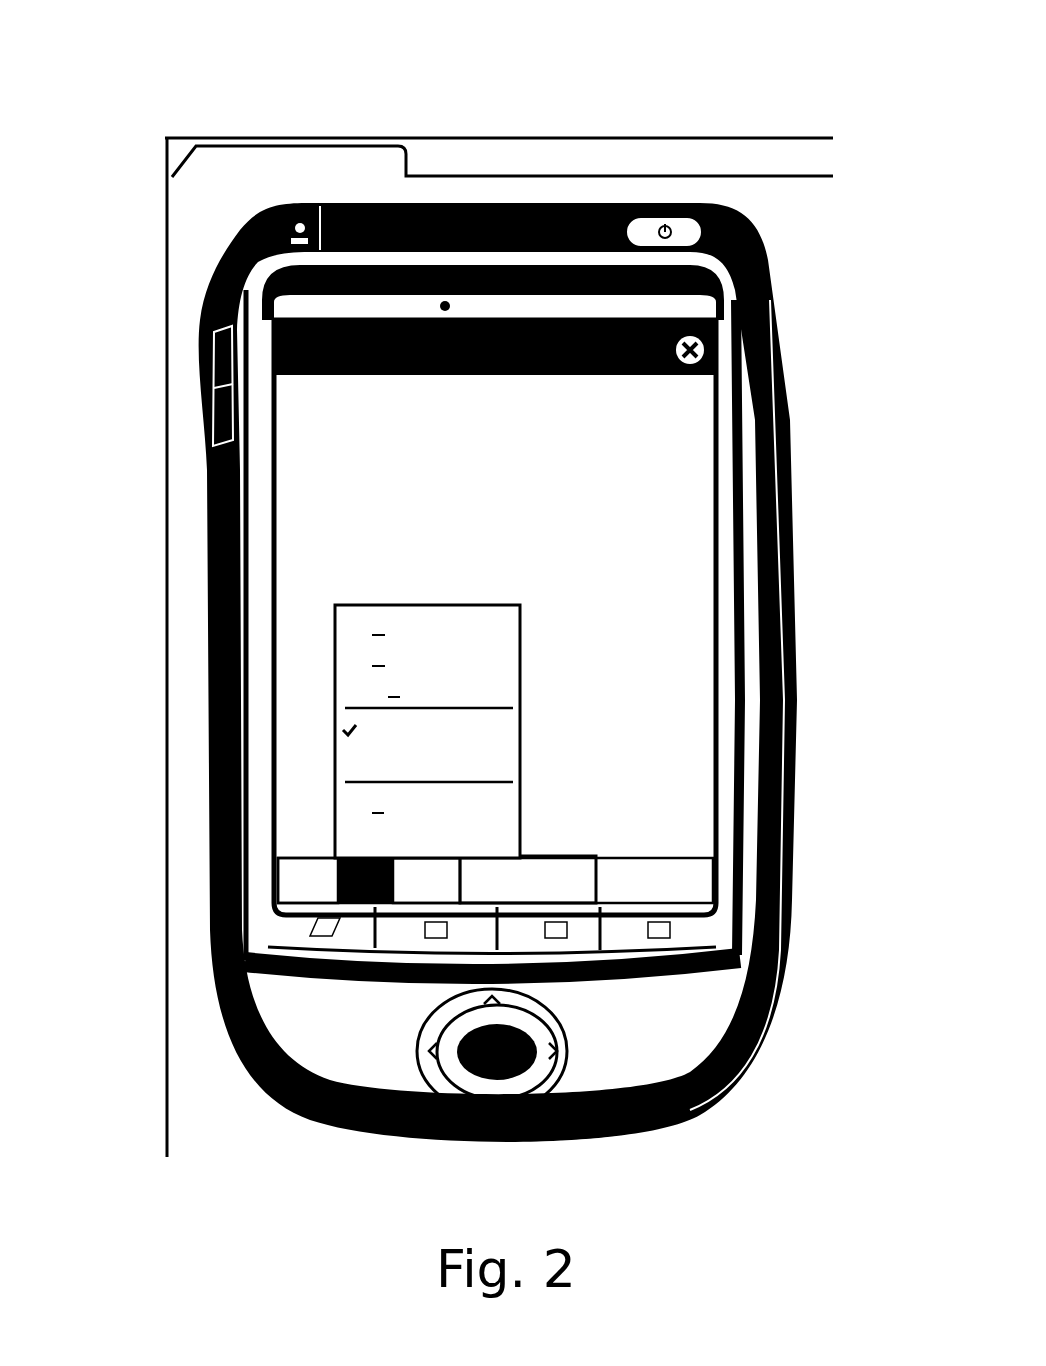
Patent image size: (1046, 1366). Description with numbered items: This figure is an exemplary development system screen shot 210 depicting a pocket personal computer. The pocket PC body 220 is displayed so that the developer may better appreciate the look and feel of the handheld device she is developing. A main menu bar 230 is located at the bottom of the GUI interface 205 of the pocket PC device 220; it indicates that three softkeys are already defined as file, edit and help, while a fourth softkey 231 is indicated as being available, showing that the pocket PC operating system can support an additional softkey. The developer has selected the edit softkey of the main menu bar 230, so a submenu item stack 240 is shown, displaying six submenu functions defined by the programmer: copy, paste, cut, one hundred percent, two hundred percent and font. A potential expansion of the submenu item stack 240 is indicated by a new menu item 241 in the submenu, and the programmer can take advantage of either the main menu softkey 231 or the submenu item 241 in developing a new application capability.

The GUI interface 205 is at (680, 545).
The development system screen shot 210 is at (577, 137).
The pocket PC body 220 is at (752, 237).
The main menu bar 230 is at (381, 846).
The fourth softkey 231 is at (557, 856).
The submenu item stack 240 is at (464, 695).
The new menu item 241 is at (493, 837).